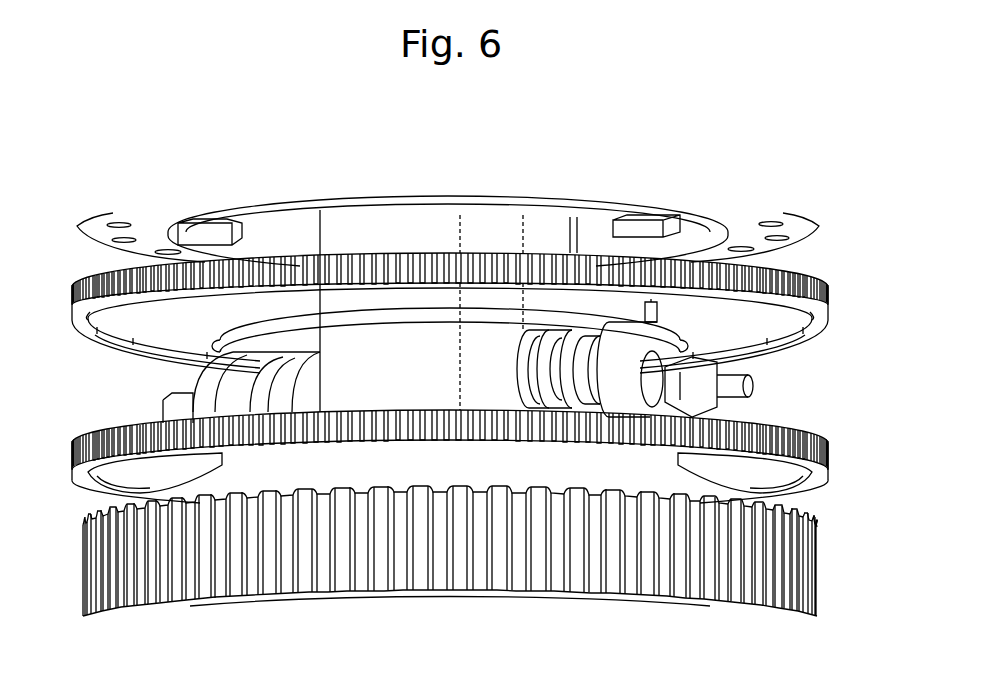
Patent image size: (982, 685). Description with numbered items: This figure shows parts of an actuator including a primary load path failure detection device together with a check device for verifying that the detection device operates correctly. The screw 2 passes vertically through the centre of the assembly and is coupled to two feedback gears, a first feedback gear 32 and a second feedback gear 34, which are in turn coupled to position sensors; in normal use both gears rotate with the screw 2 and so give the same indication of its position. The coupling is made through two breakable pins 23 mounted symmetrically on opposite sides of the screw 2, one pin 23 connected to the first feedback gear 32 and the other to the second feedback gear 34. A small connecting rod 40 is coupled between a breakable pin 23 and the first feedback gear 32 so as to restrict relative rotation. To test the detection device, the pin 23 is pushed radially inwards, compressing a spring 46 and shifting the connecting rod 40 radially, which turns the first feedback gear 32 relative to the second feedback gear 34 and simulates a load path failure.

The screw 2 is at (527, 238).
The first feedback gear 32 is at (300, 268).
The second feedback gear 34 is at (237, 430).
The connecting rod 40 is at (657, 318).
The breakable pin 23 is at (748, 390).
The spring 46 is at (570, 380).